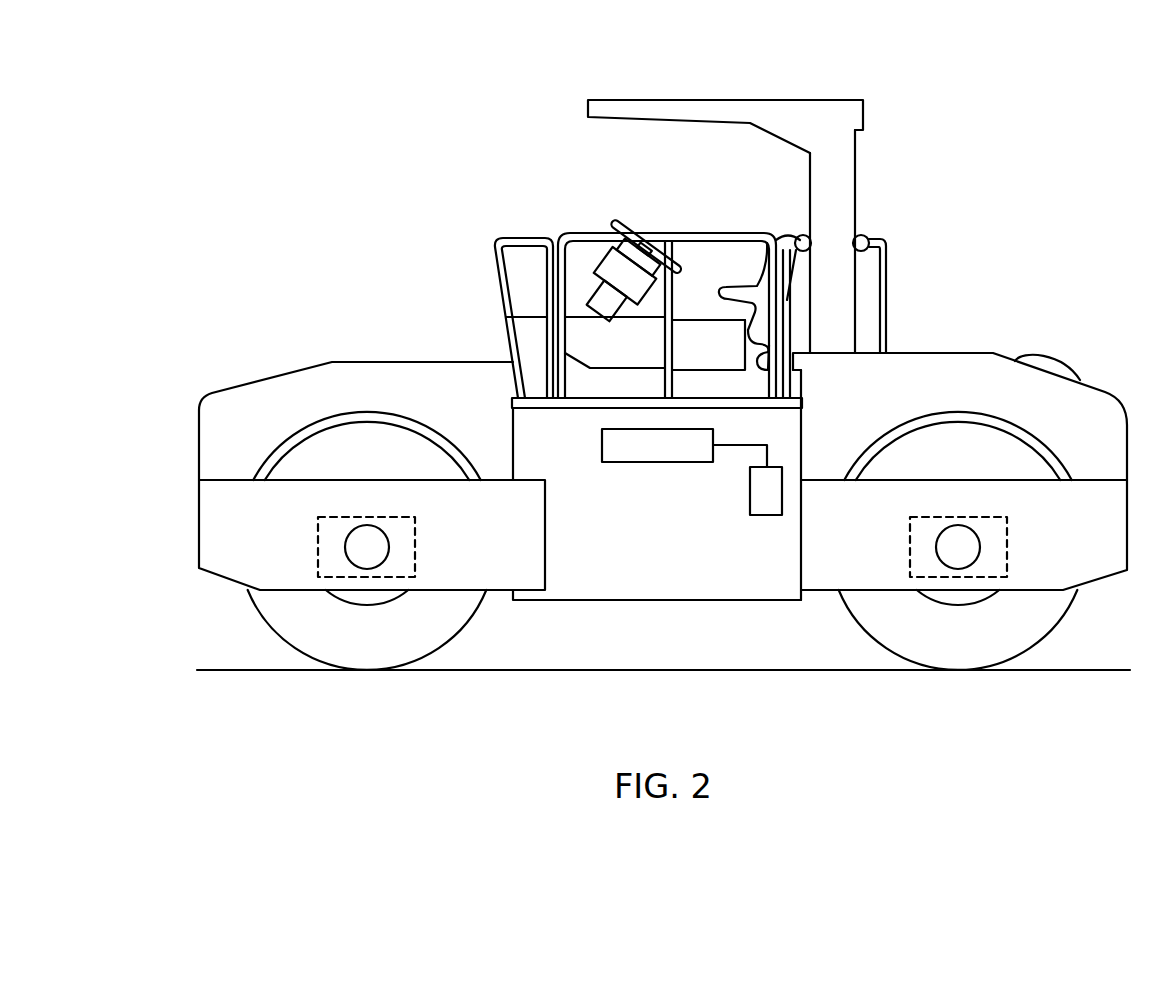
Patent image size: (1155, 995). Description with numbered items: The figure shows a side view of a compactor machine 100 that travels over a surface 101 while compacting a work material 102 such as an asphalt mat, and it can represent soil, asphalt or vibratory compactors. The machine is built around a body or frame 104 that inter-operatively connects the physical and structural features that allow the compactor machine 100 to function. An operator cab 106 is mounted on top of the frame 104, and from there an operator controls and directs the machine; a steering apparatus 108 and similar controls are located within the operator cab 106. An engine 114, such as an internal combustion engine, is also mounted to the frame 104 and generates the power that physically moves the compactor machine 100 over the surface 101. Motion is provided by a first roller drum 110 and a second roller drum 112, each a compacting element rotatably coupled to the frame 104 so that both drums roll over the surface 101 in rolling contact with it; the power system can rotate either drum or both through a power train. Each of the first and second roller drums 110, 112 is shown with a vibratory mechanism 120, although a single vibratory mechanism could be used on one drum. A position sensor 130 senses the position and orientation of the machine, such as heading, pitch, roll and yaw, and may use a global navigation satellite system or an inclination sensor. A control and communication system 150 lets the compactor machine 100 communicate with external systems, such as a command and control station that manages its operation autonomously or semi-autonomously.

The compactor machine 100 is at (346, 145).
The surface 101 is at (1072, 670).
The work material 102 is at (240, 700).
The frame 104 is at (713, 585).
The operator cab 106 is at (758, 294).
The steering apparatus 108 is at (590, 307).
The first roller drum 110 is at (292, 628).
The second roller drum 112 is at (885, 628).
The engine 114 is at (425, 370).
The vibratory mechanism 120 is at (416, 545).
The position sensor 130 is at (750, 489).
The control and communication system 150 is at (602, 443).